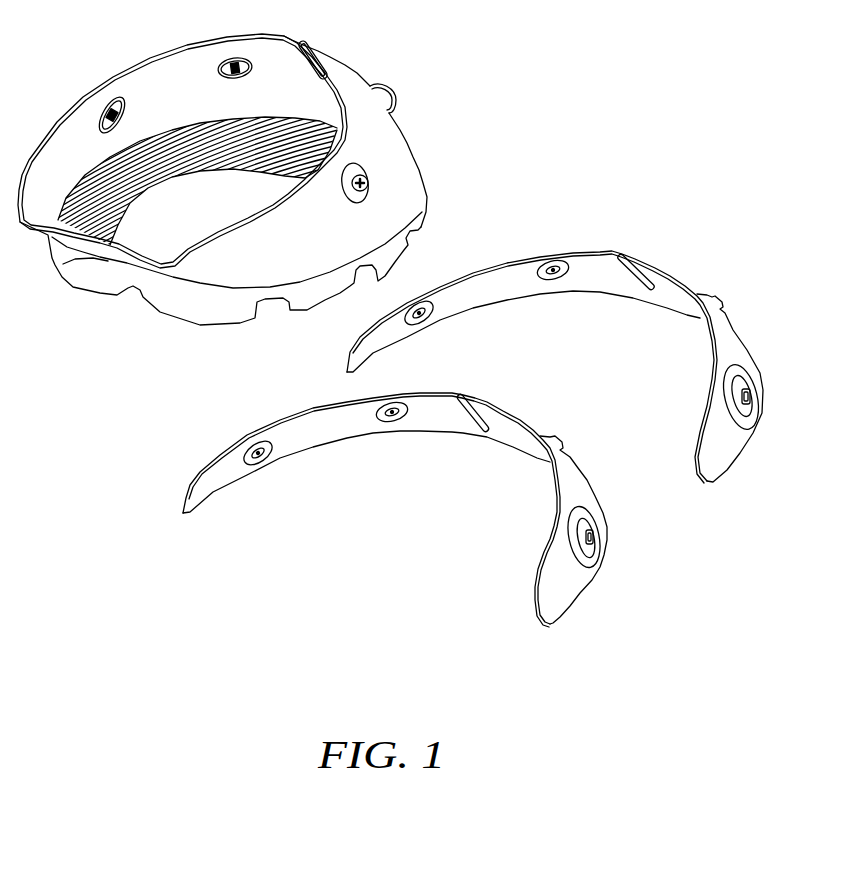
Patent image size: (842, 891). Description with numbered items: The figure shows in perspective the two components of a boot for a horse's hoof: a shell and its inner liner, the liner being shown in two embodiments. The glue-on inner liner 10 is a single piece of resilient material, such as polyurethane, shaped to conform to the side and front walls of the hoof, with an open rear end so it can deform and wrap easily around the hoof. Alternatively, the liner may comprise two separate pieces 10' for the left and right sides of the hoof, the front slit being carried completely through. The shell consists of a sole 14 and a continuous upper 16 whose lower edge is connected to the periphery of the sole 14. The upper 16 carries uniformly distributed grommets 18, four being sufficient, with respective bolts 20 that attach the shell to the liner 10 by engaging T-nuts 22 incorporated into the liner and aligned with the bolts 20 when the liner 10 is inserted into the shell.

The glue-on inner liner 10 is at (556, 325).
The separate liner pieces 10' is at (398, 485).
The sole 14 is at (64, 263).
The continuous upper 16 is at (150, 98).
The grommets 18 is at (392, 114).
The bolts 20 is at (395, 92).
The T-nuts 22 is at (548, 275).